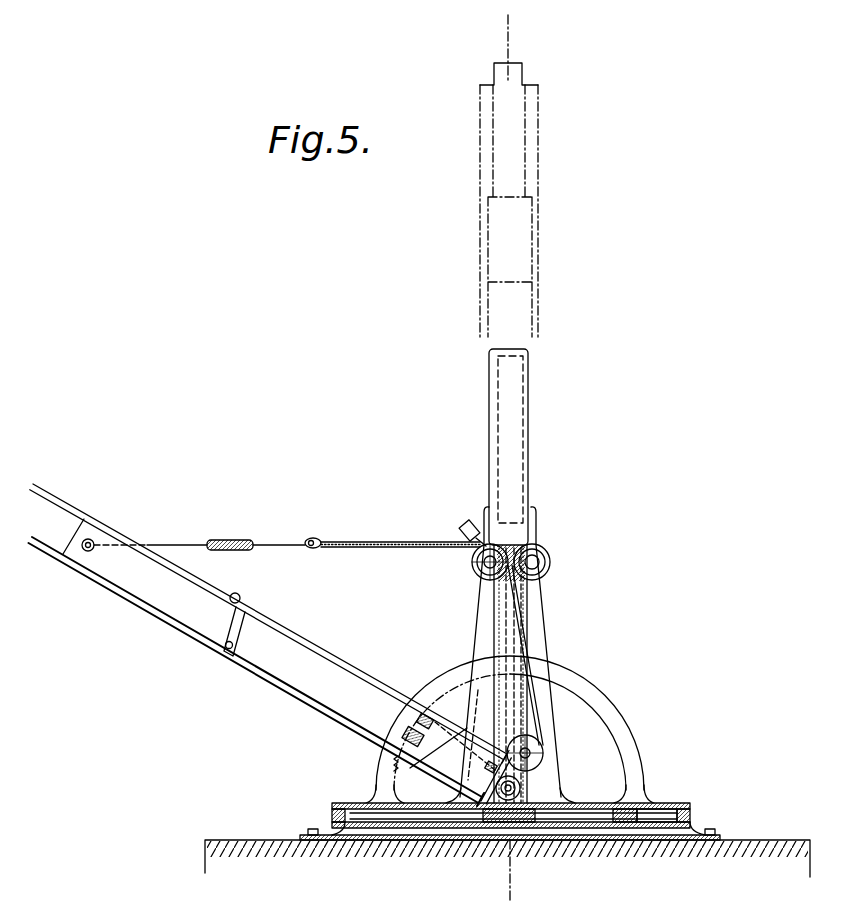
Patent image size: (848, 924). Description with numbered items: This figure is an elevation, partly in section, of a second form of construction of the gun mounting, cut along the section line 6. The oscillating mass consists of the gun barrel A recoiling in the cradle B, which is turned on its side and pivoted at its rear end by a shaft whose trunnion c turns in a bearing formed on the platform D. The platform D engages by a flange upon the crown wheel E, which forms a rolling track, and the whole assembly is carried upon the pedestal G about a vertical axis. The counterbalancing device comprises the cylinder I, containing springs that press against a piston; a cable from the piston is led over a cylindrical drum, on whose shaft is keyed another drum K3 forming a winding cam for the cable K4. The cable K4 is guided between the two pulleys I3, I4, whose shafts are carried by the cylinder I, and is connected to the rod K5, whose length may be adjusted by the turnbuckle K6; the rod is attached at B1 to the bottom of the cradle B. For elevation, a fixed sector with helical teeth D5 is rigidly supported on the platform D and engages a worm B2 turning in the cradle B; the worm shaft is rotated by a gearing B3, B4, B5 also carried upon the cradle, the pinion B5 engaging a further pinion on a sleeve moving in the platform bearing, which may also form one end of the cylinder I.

The section line 6- 6 is at (519, 460).
The cylinder I is at (517, 438).
The pulley I3 is at (472, 563).
The pulley I4 is at (550, 562).
The drum K3 is at (537, 747).
The cable K4 is at (375, 543).
The rod K5 is at (279, 541).
The turnbuckle K6 is at (228, 540).
The trunnion c is at (522, 788).
The platform D is at (588, 803).
The fixed sector with helical teeth D5 is at (613, 732).
The crown wheel E is at (592, 822).
The pedestal G is at (748, 840).
The gun barrel A is at (36, 538).
The cradle B is at (39, 488).
The connection point B1 is at (91, 539).
The worm B2 is at (406, 737).
The gear B3 is at (437, 715).
The gear B4 is at (414, 769).
The pinion B5 is at (491, 768).